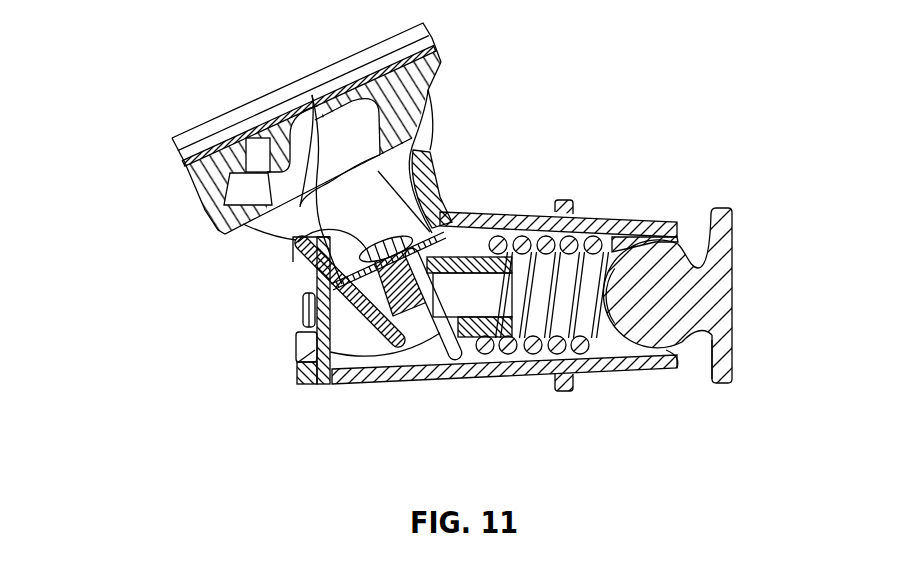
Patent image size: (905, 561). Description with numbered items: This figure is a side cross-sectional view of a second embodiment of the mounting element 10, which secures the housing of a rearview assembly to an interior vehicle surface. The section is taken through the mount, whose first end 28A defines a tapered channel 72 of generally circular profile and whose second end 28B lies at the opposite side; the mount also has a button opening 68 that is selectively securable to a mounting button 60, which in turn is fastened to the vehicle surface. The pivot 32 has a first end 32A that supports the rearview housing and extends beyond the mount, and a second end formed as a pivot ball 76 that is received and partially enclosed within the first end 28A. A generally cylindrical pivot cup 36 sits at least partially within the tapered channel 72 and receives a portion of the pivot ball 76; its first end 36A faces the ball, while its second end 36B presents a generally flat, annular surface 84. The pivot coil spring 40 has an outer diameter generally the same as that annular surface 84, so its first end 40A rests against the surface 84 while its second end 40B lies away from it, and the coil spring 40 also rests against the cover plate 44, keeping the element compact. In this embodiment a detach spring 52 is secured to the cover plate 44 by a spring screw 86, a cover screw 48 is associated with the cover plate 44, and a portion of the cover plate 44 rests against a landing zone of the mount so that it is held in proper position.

The mounting element 10 is at (196, 82).
The first end of mount 28A is at (692, 263).
The second end of mount 28B is at (330, 383).
The pivot 32 is at (727, 210).
The first end of pivot 32A is at (735, 326).
The pivot cup 36 is at (624, 224).
The first end of pivot cup 36A is at (683, 340).
The second end of pivot cup 36B is at (587, 242).
The pivot coil spring 40 is at (516, 226).
The first end of pivot coil spring 40A is at (617, 367).
The second end of pivot coil spring 40B is at (476, 220).
The cover plate 44 is at (300, 352).
The cover screw 48 is at (300, 343).
The detach spring 52 is at (312, 95).
The mounting button 60 is at (175, 136).
The button opening 68 is at (435, 133).
The tapered channel 72 is at (662, 367).
The pivot ball 76 is at (650, 250).
The generally flat, annular surface 84 is at (303, 318).
The spring screw 86 is at (290, 237).